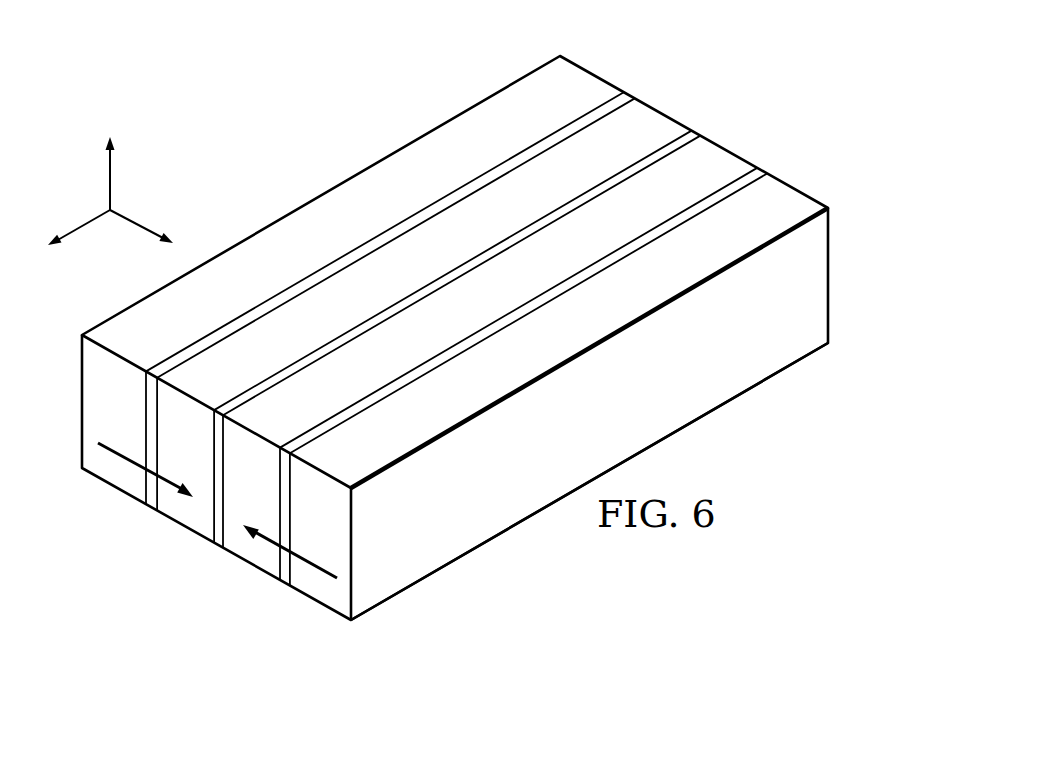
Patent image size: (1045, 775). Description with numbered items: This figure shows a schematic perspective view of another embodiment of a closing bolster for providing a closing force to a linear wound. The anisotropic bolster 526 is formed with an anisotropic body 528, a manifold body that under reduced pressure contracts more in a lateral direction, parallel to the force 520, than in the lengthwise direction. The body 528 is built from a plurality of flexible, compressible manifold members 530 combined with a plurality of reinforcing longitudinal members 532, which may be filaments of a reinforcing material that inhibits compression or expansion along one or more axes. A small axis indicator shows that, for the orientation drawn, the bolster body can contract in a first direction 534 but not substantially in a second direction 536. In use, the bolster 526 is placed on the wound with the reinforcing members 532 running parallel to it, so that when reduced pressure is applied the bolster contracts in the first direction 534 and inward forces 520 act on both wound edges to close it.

The force 520 is at (122, 452).
The anisotropic bolster 526 is at (298, 80).
The anisotropic body 528 is at (756, 393).
The flexible manifold members 530 is at (588, 80).
The reinforcing longitudinal members 532 is at (150, 500).
The first direction 534 is at (140, 222).
The second direction 536 is at (82, 222).